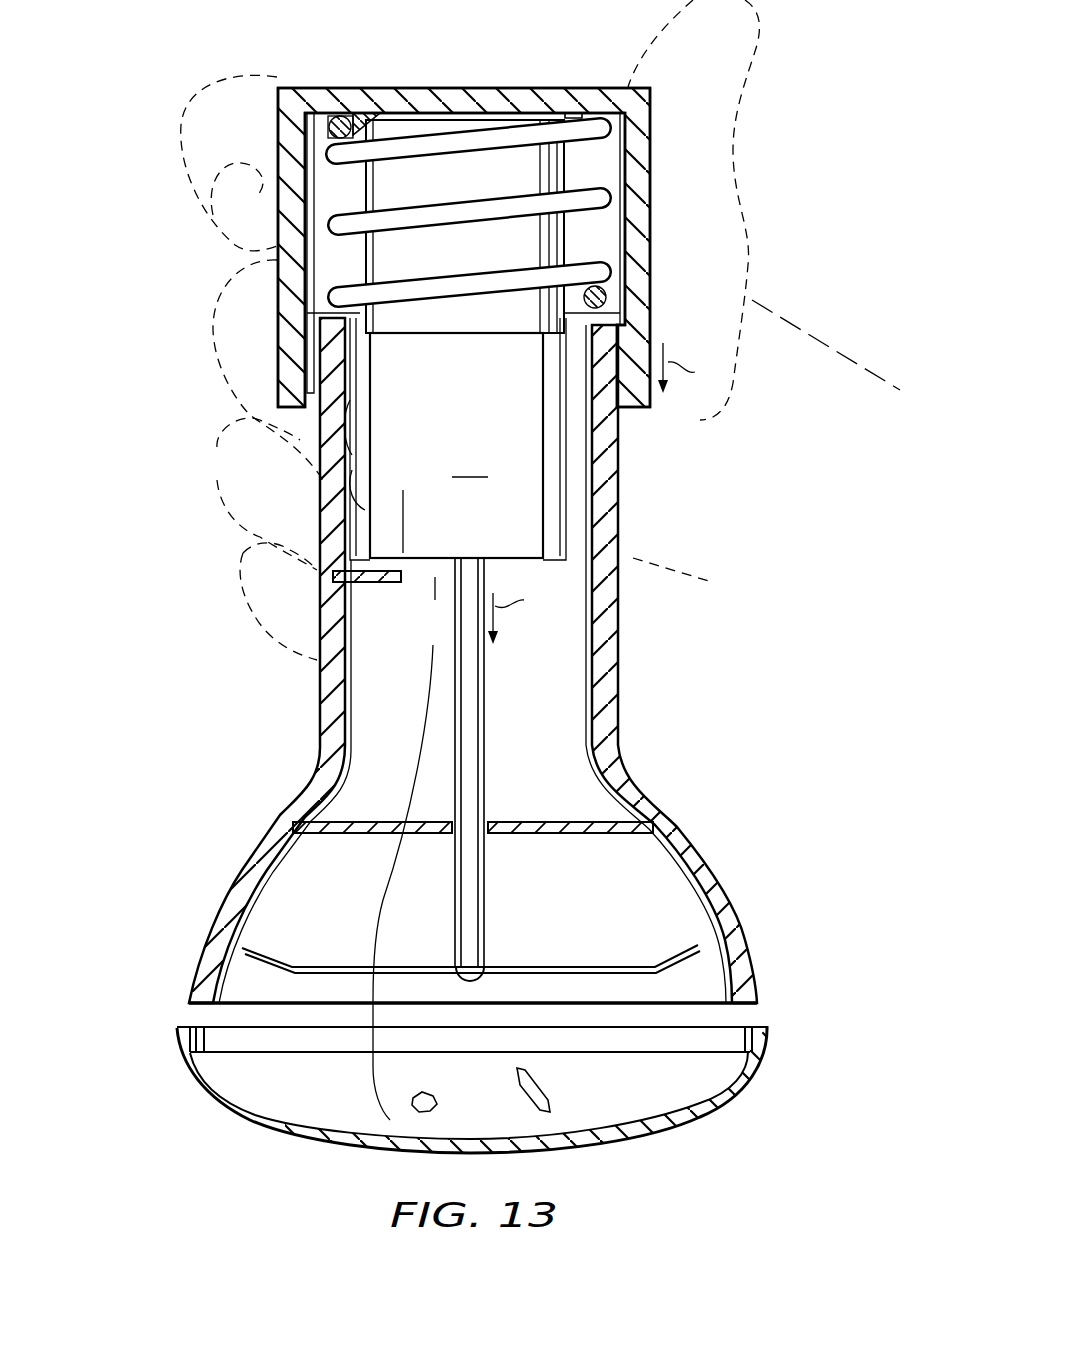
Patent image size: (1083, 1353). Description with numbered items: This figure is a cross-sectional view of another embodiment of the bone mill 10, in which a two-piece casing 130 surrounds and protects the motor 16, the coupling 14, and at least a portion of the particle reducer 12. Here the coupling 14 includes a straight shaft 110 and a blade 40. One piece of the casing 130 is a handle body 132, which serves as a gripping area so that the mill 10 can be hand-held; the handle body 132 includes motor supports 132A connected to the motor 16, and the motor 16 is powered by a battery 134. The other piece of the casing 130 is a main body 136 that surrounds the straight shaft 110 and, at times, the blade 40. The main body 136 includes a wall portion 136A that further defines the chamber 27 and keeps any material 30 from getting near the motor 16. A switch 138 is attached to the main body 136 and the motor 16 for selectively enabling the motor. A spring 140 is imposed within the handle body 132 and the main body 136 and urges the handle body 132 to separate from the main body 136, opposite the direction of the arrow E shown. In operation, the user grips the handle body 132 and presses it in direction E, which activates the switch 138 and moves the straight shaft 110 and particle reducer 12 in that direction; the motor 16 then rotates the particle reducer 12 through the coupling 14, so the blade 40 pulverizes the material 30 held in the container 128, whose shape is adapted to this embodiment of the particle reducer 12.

The mill 10 is at (92, 283).
The particle reducer 12 is at (473, 948).
The blade 40 is at (612, 948).
The coupling 14 is at (527, 769).
The straight shaft 110 is at (487, 868).
The motor 16 is at (458, 439).
The chamber 27 is at (438, 932).
The material 30 is at (440, 1100).
The container 128 is at (613, 1130).
The two-piece casing 130 is at (662, 297).
The handle body 132 is at (645, 112).
The motor supports 132A is at (363, 116).
The battery 134 is at (490, 263).
The main body 136 is at (615, 652).
The wall portion 136A is at (533, 821).
The switch 138 is at (402, 580).
The spring 140 is at (600, 213).